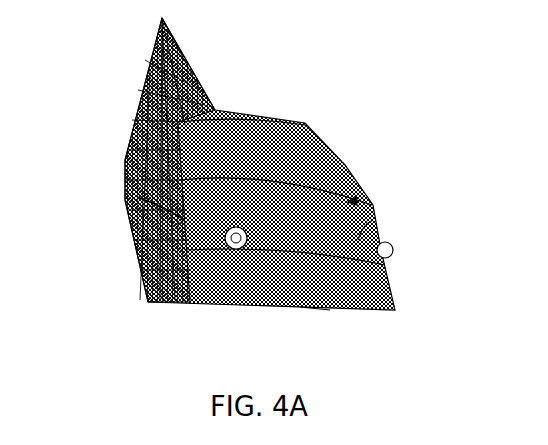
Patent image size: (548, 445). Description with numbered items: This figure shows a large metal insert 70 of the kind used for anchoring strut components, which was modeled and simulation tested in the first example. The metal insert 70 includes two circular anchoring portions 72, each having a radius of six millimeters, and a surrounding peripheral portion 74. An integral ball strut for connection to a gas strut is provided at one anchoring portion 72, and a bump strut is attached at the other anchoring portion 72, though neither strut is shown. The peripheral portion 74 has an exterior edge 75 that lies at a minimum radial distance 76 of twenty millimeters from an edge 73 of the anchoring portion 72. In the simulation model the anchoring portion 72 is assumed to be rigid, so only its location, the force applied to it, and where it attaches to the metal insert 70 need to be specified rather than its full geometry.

The metal insert 70 is at (307, 145).
The anchoring portion 72 is at (226, 234).
The edge of anchoring portion 73 is at (313, 308).
The peripheral portion 74 is at (137, 197).
The exterior edge 75 is at (373, 220).
The minimum radial distance 76 is at (355, 198).